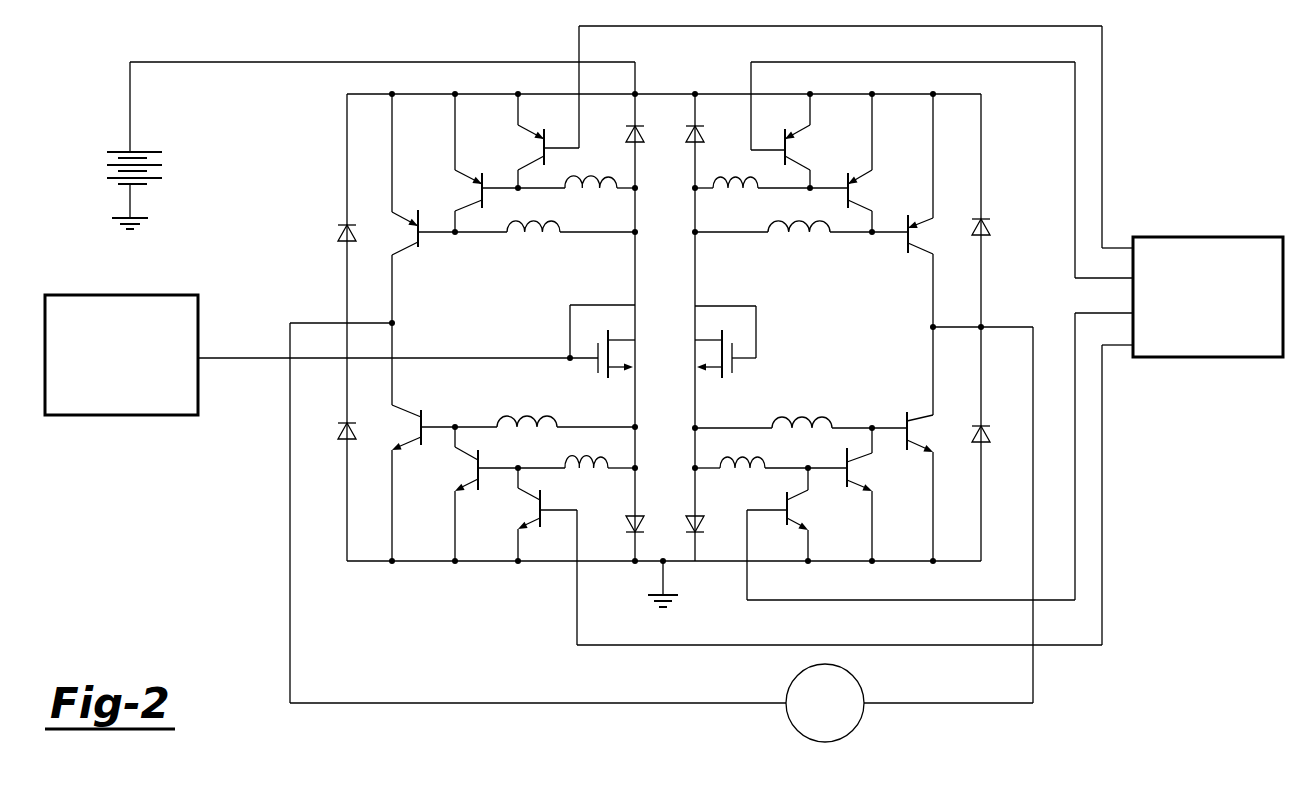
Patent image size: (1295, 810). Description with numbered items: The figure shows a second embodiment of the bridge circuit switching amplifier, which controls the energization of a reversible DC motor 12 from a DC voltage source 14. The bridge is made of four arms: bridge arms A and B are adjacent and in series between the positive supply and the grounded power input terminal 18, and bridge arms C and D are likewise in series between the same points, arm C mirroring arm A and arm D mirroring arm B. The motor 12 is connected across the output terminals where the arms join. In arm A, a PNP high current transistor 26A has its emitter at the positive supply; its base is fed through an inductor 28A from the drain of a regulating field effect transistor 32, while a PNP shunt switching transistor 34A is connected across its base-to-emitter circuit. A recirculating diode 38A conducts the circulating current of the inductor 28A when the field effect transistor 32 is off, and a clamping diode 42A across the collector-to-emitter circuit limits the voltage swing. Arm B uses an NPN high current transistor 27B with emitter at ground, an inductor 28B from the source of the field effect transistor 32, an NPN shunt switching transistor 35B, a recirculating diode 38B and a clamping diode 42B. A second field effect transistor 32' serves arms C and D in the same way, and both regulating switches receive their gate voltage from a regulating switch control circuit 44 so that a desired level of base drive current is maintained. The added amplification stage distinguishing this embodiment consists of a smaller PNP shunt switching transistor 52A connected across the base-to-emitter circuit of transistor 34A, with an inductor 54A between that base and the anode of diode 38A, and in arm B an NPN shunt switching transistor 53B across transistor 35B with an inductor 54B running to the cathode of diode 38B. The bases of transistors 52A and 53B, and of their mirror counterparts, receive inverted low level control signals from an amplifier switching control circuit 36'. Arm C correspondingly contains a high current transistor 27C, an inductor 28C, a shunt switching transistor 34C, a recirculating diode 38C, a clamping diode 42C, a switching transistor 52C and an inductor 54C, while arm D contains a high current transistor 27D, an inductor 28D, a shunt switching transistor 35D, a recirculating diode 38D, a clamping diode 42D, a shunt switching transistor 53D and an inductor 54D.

The reversible DC motor 12 is at (866, 686).
The DC voltage source 14 is at (152, 139).
The power input terminal 18 is at (661, 594).
The high current transistor 26A is at (400, 249).
The high current transistor 27B is at (432, 415).
The high current transistor 27C is at (925, 262).
The high current transistor 27D is at (903, 416).
The inductor 28A is at (503, 246).
The inductor 28B is at (562, 400).
The inductor 28C is at (778, 245).
The inductor 28D is at (832, 398).
The field effect transistor 32 is at (577, 351).
The field effect transistor 32' is at (753, 347).
The shunt switching transistor 34A is at (465, 193).
The shunt switching transistor 34C is at (865, 195).
The shunt switching transistor 35B is at (470, 462).
The shunt switching transistor 35D is at (855, 466).
The amplifier switching control circuit 36' is at (1208, 276).
The recirculating diode 38A is at (640, 144).
The recirculating diode 38B is at (622, 522).
The recirculating diode 38C is at (700, 144).
The recirculating diode 38D is at (688, 518).
The clamping diode 42A is at (340, 243).
The clamping diode 42B is at (346, 443).
The clamping diode 42C is at (992, 228).
The clamping diode 42D is at (985, 444).
The regulating switch control circuit 44 is at (135, 295).
The shunt switching transistor 52A is at (540, 151).
The switching transistor 52C is at (803, 165).
The shunt switching transistor 53B is at (528, 518).
The shunt switching transistor 53D is at (795, 512).
The inductor 54A is at (608, 172).
The inductor 54B is at (610, 455).
The inductor 54C is at (718, 198).
The inductor 54D is at (755, 455).
The bridge arm A is at (316, 174).
The bridge arm B is at (270, 603).
The bridge arm C is at (1001, 146).
The bridge arm D is at (996, 523).